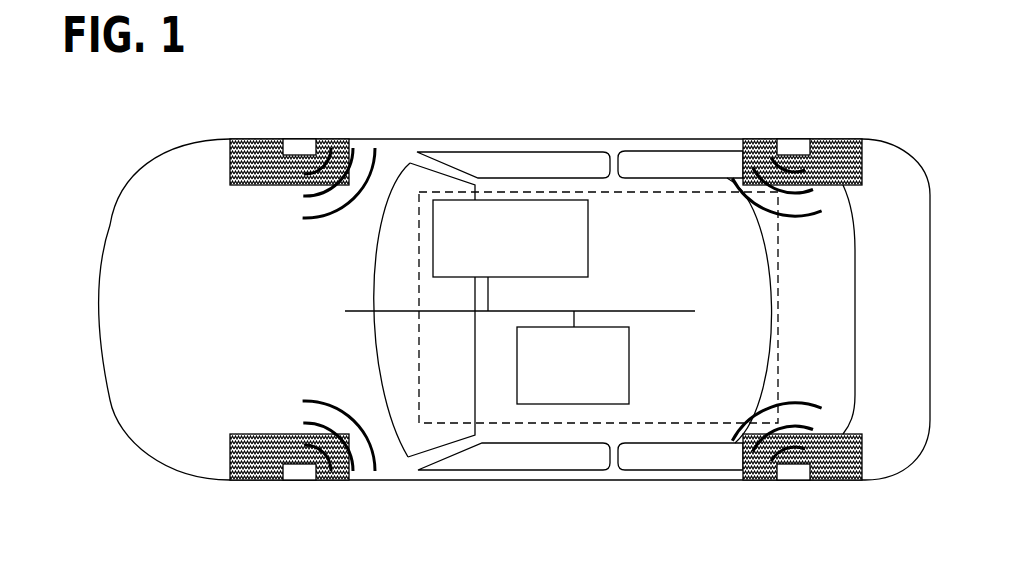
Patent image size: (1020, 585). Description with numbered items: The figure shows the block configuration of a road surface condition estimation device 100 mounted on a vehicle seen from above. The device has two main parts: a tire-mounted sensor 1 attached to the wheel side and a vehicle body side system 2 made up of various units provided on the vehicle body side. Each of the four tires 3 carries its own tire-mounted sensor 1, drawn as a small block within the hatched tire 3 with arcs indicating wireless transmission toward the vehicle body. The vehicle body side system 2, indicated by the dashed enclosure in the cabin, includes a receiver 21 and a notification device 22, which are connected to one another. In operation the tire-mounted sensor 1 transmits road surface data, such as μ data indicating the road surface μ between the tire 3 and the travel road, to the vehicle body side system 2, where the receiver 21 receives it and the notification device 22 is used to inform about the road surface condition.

The road surface condition estimation device 100 is at (430, 114).
The tire-mounted sensor 1 is at (296, 148).
The vehicle body side system 2 is at (713, 192).
The tire 3 is at (230, 165).
The receiver 21 is at (588, 404).
The notification device 22 is at (500, 200).